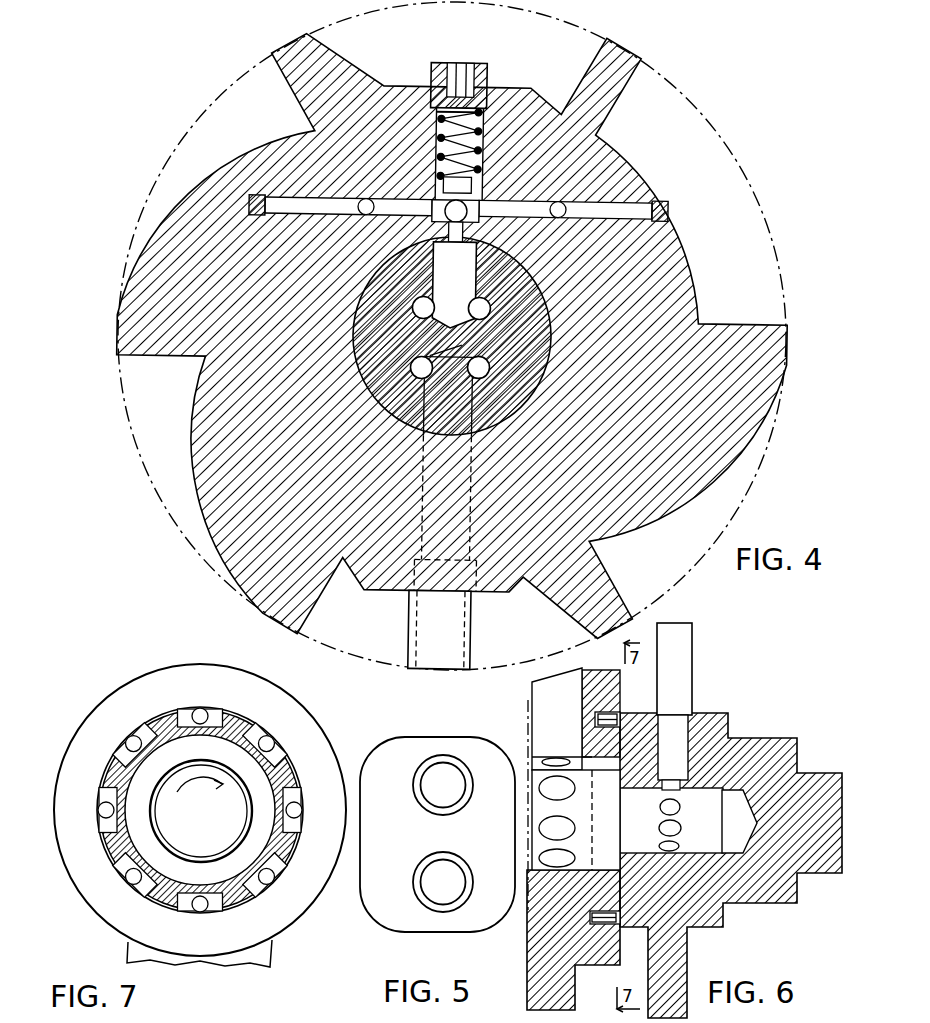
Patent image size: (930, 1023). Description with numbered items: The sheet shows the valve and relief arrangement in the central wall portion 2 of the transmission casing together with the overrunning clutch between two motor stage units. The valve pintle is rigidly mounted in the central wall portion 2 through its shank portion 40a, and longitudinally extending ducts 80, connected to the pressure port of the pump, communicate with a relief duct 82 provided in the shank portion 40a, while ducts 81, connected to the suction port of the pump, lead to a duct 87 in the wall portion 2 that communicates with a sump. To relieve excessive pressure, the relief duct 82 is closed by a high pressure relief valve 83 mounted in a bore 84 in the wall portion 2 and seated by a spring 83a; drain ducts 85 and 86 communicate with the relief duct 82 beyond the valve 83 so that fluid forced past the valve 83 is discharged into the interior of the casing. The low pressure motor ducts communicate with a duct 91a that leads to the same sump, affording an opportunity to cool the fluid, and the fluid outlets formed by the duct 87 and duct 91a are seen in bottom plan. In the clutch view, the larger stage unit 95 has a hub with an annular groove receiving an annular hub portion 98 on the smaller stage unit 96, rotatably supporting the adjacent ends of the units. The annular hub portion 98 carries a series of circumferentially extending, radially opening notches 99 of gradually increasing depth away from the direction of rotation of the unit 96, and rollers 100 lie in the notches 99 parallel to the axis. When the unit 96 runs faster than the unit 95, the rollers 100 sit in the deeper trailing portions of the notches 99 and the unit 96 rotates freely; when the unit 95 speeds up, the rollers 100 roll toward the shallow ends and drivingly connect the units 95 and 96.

In FIG. 4, the central wall portion 2 is at (698, 262).
In FIG. 5, the central wall portion 2 is at (405, 751).
In FIG. 4, the shank portion 40a is at (451, 335).
In FIG. 4, the ducts 80 is at (474, 301).
In FIG. 4, the ducts 81 is at (416, 377).
In FIG. 4, the relief duct 82 is at (454, 275).
In FIG. 4, the high pressure relief valve 83 is at (435, 203).
In FIG. 4, the spring 83a is at (450, 158).
In FIG. 4, the bore 84 is at (468, 145).
In FIG. 4, the drain duct 85 is at (284, 205).
In FIG. 4, the drain duct 86 is at (364, 217).
In FIG. 4, the duct 87 is at (466, 498).
In FIG. 5, the duct 87 is at (433, 883).
In FIG. 5, the duct 91a is at (432, 790).
In FIG. 7, the stage unit 95 is at (145, 684).
In FIG. 6, the stage unit 95 is at (620, 701).
In FIG. 7, the stage unit 96 is at (257, 798).
In FIG. 6, the stage unit 96 is at (720, 714).
In FIG. 6, the annular hub portion 98 is at (600, 739).
In FIG. 7, the notches 99 is at (278, 753).
In FIG. 7, the rollers 100 is at (274, 745).
In FIG. 6, the rollers 100 is at (630, 712).